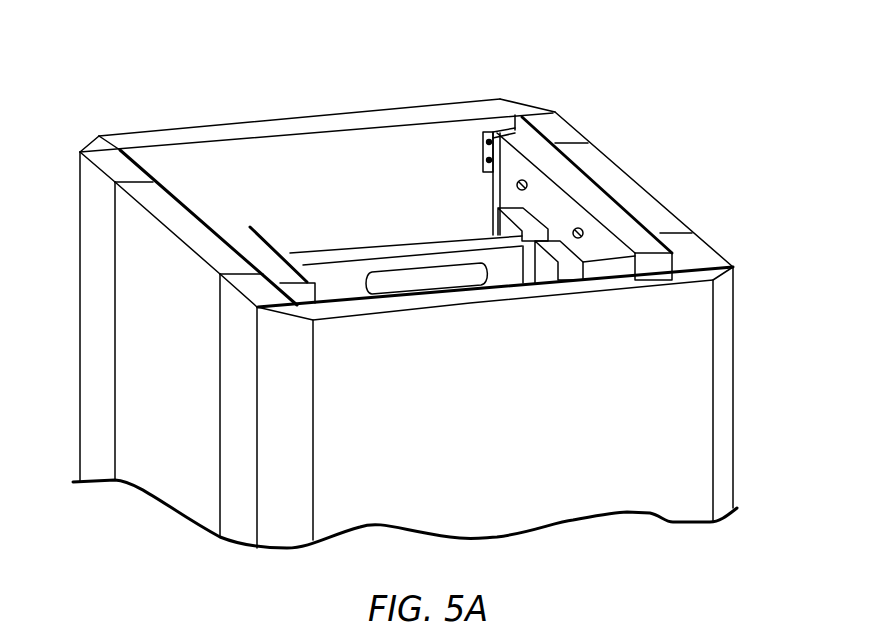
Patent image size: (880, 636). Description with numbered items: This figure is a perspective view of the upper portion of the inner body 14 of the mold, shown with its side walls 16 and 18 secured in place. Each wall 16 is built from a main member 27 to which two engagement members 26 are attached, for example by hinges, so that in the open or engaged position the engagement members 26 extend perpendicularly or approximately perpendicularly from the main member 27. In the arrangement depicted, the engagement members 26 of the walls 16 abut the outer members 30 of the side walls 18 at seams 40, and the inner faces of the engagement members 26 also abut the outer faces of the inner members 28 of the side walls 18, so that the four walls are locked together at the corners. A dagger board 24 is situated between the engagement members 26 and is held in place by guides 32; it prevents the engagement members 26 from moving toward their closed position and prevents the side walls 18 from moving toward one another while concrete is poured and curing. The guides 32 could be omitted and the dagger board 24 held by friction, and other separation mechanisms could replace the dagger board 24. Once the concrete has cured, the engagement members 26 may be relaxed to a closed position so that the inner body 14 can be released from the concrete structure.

The inner body 14 is at (148, 98).
The wall 16 is at (390, 117).
The side wall 18 is at (642, 205).
The dagger board 24 is at (413, 262).
The engagement member 26 is at (542, 112).
The main member 27 is at (380, 194).
The inner member 28 is at (558, 217).
The outer member 30 is at (630, 195).
The guide 32 is at (558, 262).
The seam 40 is at (127, 177).